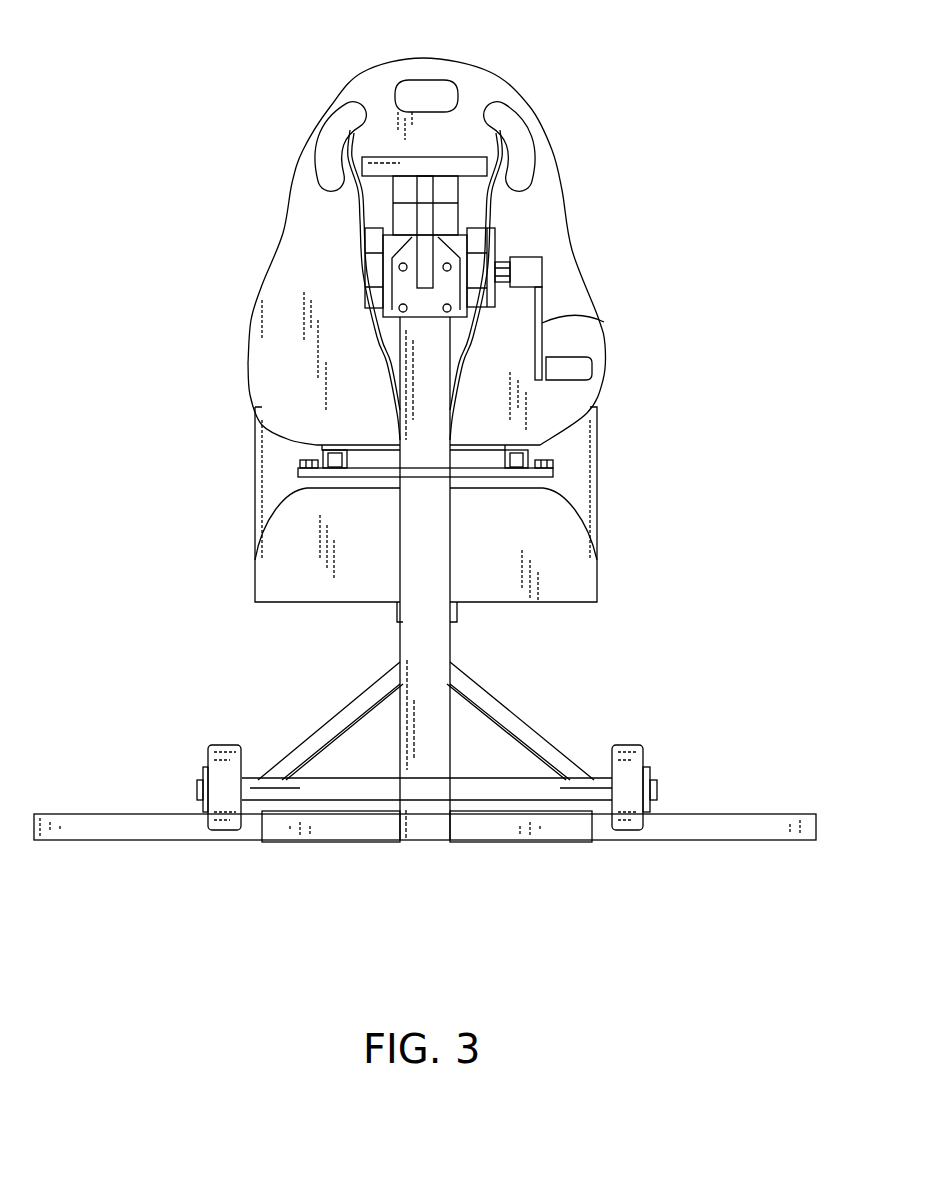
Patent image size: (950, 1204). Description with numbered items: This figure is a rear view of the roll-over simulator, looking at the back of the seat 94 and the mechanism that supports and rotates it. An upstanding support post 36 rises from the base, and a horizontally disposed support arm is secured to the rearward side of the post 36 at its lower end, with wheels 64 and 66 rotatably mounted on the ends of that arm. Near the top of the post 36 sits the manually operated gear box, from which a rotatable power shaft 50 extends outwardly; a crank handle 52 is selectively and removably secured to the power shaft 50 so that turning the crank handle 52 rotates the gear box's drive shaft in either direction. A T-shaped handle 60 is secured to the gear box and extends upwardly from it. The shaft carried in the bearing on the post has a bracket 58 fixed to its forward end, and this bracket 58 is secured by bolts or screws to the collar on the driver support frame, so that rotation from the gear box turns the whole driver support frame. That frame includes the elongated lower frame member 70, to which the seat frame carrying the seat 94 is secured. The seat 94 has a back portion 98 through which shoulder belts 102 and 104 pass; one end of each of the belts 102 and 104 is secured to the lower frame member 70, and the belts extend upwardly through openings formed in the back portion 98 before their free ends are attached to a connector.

The support post 36 is at (452, 638).
The power shaft 50 is at (503, 265).
The crank handle 52 is at (542, 325).
The bracket 58 is at (443, 253).
The T-shaped handle 60 is at (457, 167).
The wheel 64 is at (632, 747).
The wheel 66 is at (222, 750).
The lower frame member 70 is at (533, 455).
The seat 94 is at (255, 302).
The back portion 98 is at (295, 235).
The shoulder belt 102 is at (503, 195).
The shoulder belt 104 is at (348, 203).